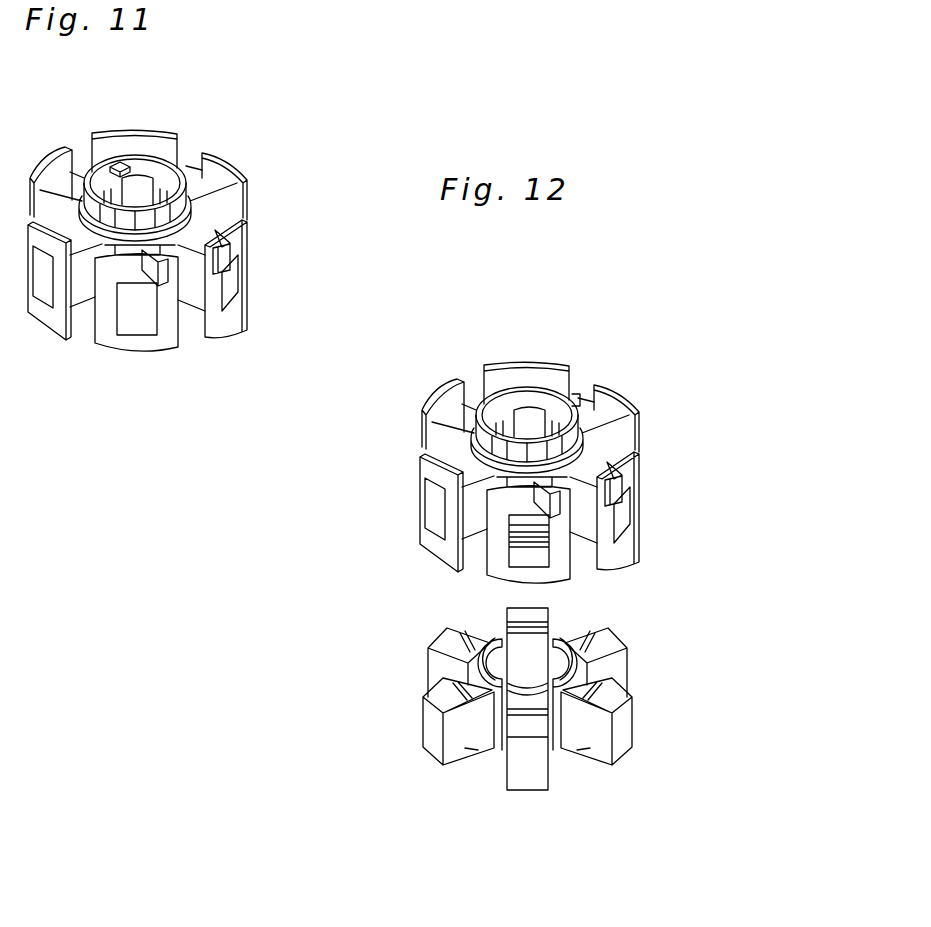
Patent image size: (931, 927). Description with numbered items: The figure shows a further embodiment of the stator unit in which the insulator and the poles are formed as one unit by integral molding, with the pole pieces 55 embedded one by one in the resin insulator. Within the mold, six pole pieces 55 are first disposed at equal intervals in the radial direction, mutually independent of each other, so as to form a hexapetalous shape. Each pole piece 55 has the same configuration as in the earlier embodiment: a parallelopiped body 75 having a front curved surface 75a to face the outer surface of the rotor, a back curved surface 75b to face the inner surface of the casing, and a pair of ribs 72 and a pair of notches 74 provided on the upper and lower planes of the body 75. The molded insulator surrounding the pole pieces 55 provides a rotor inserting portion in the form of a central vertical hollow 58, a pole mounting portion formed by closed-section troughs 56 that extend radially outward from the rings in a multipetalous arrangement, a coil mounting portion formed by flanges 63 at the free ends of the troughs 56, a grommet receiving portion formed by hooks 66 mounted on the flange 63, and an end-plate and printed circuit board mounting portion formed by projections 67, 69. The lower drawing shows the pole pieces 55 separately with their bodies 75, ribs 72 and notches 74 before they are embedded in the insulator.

In FIG. 11, the pole piece 55 is at (145, 320).
In FIG. 12, the pole piece 55 is at (443, 643).
In FIG. 11, the trough 56 is at (110, 238).
In FIG. 12, the trough 56 is at (590, 462).
In FIG. 11, the hollow 58 is at (152, 170).
In FIG. 12, the hollow 58 is at (544, 403).
In FIG. 11, the flange 63 is at (106, 333).
In FIG. 12, the flange 63 is at (622, 548).
In FIG. 11, the hook 66 is at (229, 264).
In FIG. 12, the hook 66 is at (613, 497).
In FIG. 11, the outer projection 67 is at (120, 166).
In FIG. 12, the outer projection 67 is at (515, 375).
In FIG. 12, the projection 69 is at (575, 403).
In FIG. 12, the rib 72 is at (523, 557).
In FIG. 12, the notch 74 is at (490, 670).
In FIG. 12, the parallelopiped body 75 is at (445, 633).
In FIG. 12, the front curved surface 75a is at (567, 655).
In FIG. 12, the back curved surface 75b is at (620, 733).